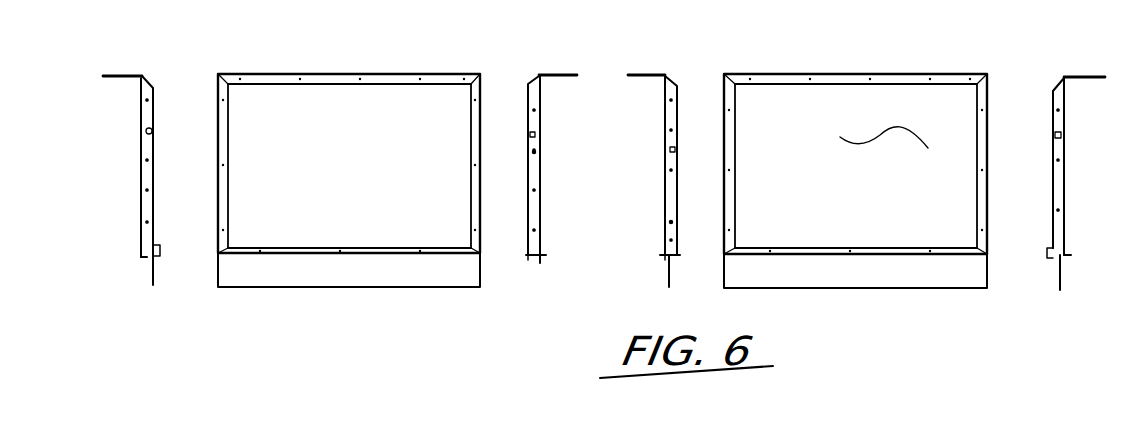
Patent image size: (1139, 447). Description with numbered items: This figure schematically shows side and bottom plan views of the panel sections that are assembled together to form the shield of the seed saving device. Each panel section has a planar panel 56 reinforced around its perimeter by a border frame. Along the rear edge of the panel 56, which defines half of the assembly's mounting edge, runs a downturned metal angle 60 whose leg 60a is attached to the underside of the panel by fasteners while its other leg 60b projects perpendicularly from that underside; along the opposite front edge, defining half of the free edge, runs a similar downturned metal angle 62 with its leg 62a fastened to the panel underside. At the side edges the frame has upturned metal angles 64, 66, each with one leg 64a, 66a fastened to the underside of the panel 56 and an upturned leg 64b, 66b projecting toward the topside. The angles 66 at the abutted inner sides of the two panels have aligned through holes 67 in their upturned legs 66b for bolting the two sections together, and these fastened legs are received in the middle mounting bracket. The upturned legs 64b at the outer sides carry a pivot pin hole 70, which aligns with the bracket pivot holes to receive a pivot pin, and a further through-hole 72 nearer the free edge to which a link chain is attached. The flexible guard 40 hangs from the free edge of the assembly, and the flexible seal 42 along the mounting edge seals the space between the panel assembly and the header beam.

The flexible guard 40 is at (109, 68).
The flexible seal 42 is at (141, 284).
The planar panel 56 is at (880, 128).
The downturned metal angle 60 is at (360, 241).
The leg of downturned metal angle 60a is at (390, 250).
The leg of downturned metal angle 60b is at (134, 254).
The downturned metal angle 62 is at (337, 70).
The leg of downturned metal angle 62a is at (975, 38).
The upturned metal angle 64 is at (162, 84).
The leg of upturned metal angle 64a is at (228, 140).
The upturned leg 64b is at (141, 200).
The upturned metal angle 66 is at (466, 211).
The leg of upturned metal angle 66a is at (472, 112).
The upturned leg 66b is at (526, 106).
The through hole 67 is at (535, 152).
The pivot pin hole 70 is at (155, 250).
The through-hole 72 is at (158, 128).